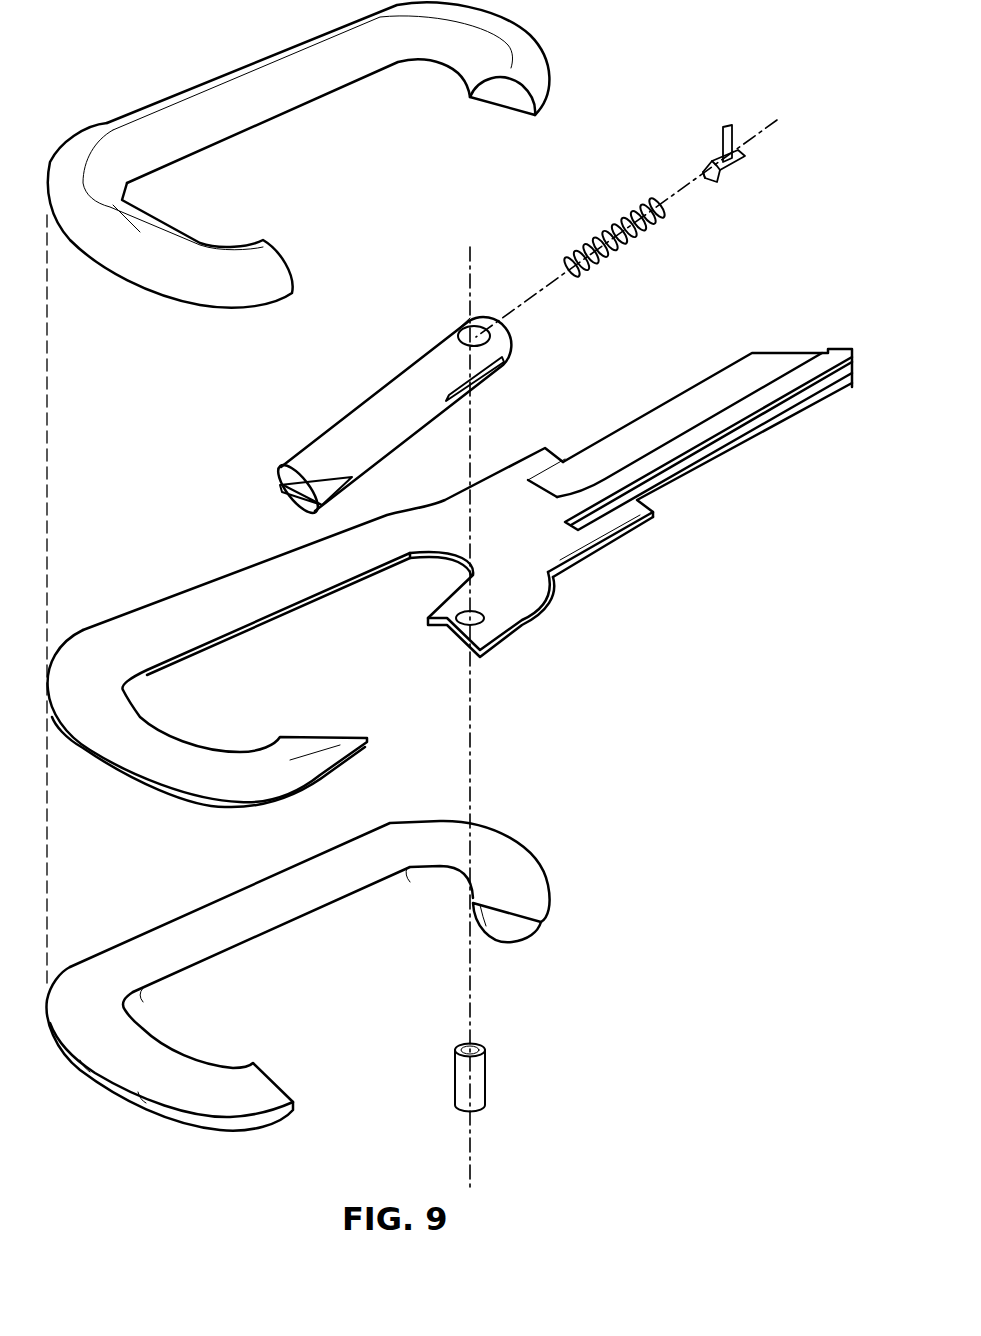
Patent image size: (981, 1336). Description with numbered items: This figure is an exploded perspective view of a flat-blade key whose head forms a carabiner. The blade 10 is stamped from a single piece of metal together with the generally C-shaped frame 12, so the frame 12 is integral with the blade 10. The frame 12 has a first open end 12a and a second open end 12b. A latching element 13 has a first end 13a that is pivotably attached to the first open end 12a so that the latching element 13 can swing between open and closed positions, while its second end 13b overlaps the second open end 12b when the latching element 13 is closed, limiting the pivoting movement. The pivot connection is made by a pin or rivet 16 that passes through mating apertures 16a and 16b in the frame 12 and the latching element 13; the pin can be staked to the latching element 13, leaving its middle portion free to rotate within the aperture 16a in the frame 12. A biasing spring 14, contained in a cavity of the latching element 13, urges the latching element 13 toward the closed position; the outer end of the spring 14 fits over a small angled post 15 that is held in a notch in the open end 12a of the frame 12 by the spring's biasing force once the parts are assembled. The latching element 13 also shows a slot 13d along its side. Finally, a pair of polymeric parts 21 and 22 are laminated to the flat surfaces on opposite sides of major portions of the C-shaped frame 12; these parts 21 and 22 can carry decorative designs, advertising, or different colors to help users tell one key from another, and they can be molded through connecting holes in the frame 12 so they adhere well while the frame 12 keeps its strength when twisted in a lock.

The blade 10 is at (700, 472).
The C-shaped frame 12 is at (350, 632).
The first open end 12a is at (520, 625).
The second open end 12b is at (348, 760).
The latching element 13 is at (357, 373).
The first end 13a is at (438, 342).
The second end 13b is at (290, 460).
The side slot of cylinder 13d is at (340, 490).
The biasing spring 14 is at (623, 217).
The angled post 15 is at (725, 123).
The pin or rivet 16 is at (487, 1088).
The aperture 16a is at (462, 637).
The aperture 16b is at (457, 337).
The polymeric part 21 is at (212, 85).
The polymeric part 22 is at (205, 918).